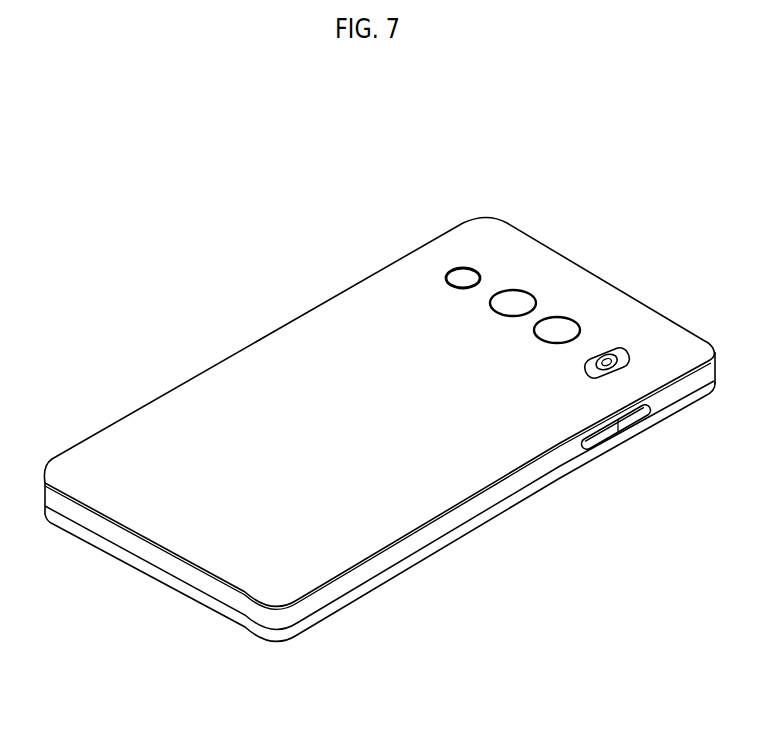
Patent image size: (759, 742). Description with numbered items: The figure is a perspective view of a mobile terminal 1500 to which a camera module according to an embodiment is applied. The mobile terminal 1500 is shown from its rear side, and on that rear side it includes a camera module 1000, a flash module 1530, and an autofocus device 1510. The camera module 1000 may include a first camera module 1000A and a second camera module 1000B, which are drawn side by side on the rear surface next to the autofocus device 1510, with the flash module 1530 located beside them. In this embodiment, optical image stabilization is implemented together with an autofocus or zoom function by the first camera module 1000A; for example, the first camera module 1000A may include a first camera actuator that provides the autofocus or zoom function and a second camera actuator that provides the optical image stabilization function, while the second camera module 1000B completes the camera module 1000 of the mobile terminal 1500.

The mobile terminal 1500 is at (52, 152).
The autofocus device 1510 is at (462, 275).
The camera module 1000 is at (563, 235).
The first camera module 1000A is at (566, 323).
The second camera module 1000B is at (516, 296).
The flash module 1530 is at (632, 339).